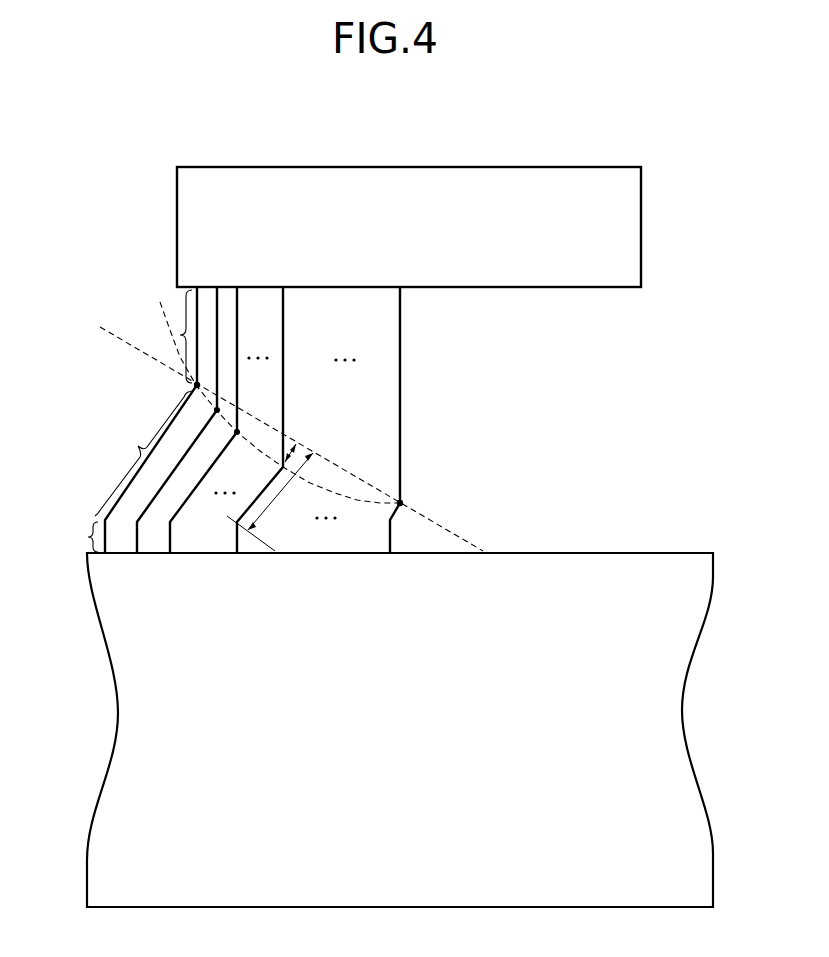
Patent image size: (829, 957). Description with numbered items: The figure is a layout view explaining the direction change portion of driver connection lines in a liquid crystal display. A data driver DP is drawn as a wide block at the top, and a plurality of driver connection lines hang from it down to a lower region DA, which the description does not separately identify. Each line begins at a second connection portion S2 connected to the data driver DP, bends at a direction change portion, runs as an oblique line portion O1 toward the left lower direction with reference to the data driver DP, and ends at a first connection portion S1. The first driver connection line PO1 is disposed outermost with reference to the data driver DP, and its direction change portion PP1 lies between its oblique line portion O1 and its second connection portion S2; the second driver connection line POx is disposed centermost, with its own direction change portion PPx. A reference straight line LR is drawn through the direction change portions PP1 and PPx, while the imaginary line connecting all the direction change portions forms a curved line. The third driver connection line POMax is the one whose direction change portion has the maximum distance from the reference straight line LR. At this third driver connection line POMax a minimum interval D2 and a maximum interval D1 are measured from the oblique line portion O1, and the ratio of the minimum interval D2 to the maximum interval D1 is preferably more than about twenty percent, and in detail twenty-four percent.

The data driver DP is at (625, 232).
The driving area / driver DA is at (400, 730).
The reference straight line LR is at (278, 428).
The second connection portion S2 is at (172, 336).
The first connection portion S1 is at (80, 537).
The direction change portion PP1 is at (196, 385).
The direction change portion PPx is at (423, 491).
The first driver connection line PO1 is at (130, 480).
The second driver connection line POx is at (420, 420).
The third driver connection line POMax is at (283, 325).
The oblique line portion O1 is at (138, 446).
The maximum interval D1 is at (270, 502).
The minimum interval D2 is at (296, 444).